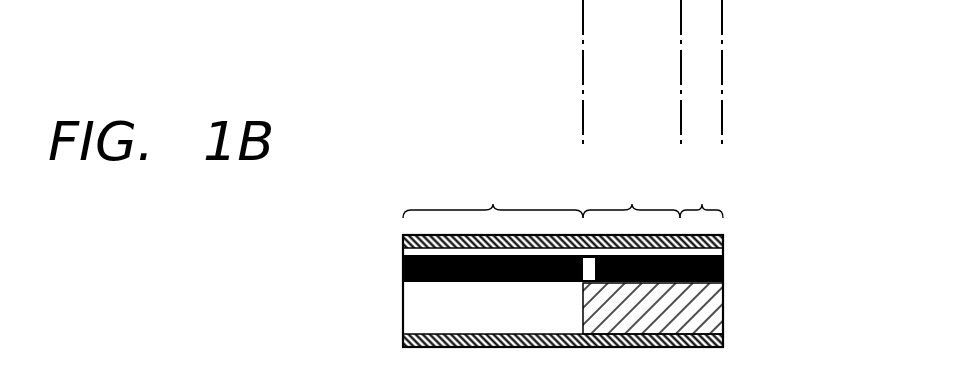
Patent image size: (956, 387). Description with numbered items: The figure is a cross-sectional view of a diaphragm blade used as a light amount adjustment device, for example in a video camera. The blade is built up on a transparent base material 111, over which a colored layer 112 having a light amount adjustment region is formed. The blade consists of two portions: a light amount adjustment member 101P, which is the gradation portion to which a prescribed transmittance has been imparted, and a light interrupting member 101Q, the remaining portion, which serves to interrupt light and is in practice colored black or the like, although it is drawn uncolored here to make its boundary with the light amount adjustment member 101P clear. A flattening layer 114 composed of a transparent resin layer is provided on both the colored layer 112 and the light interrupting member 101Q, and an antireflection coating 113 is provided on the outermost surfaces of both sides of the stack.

The light interrupting member 101Q is at (572, 196).
The light amount adjustment member 101P is at (631, 196).
The transparent base material 111 is at (723, 310).
The colored layer 112 is at (728, 258).
The antireflection coating 113 is at (403, 240).
The flattening layer 114 is at (723, 251).